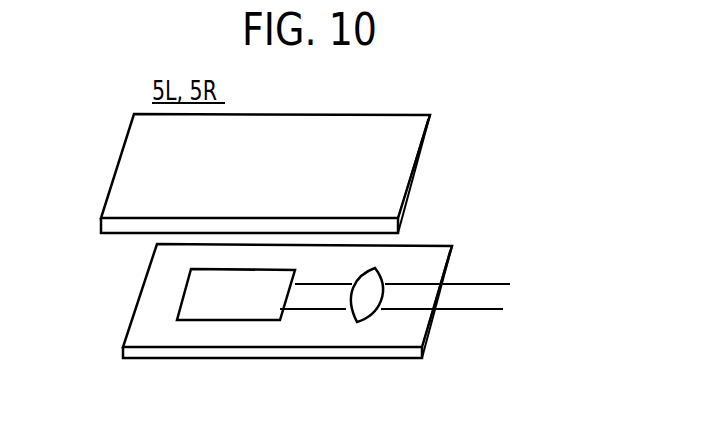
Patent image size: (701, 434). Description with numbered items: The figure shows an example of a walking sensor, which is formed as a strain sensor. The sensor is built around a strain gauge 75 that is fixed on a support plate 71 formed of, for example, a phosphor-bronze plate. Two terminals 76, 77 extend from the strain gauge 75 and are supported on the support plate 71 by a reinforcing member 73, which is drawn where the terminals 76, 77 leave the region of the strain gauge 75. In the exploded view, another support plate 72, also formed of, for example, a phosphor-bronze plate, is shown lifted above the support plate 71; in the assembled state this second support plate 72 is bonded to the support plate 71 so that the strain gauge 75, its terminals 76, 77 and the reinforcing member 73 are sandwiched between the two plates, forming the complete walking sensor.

The support plate 71 is at (152, 295).
The support plate 72 is at (413, 139).
The reinforcing member 73 is at (365, 310).
The strain gauge 75 is at (233, 308).
The terminal 76 is at (485, 283).
The terminal 77 is at (485, 312).